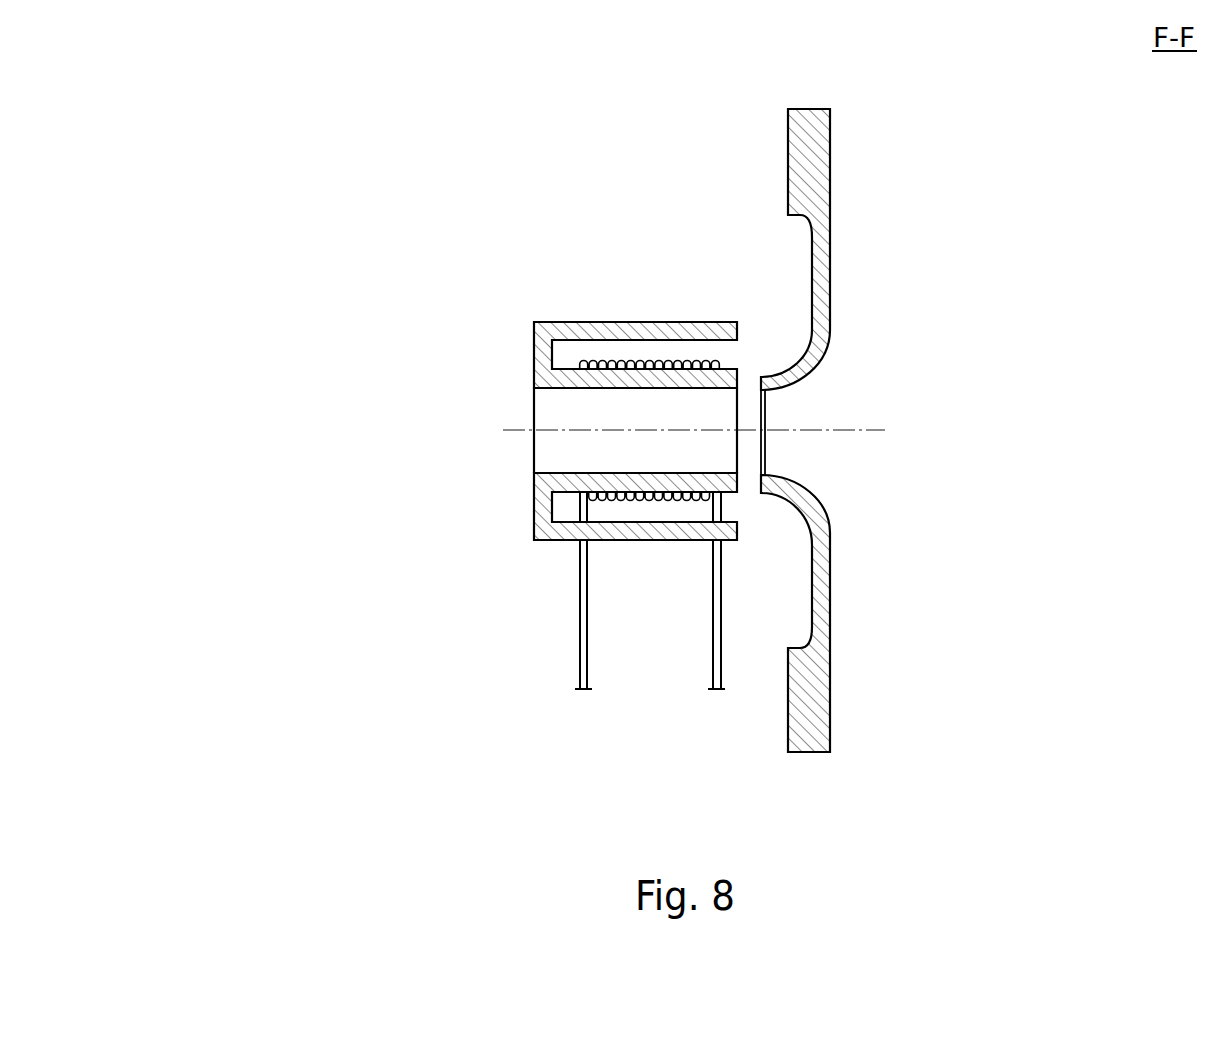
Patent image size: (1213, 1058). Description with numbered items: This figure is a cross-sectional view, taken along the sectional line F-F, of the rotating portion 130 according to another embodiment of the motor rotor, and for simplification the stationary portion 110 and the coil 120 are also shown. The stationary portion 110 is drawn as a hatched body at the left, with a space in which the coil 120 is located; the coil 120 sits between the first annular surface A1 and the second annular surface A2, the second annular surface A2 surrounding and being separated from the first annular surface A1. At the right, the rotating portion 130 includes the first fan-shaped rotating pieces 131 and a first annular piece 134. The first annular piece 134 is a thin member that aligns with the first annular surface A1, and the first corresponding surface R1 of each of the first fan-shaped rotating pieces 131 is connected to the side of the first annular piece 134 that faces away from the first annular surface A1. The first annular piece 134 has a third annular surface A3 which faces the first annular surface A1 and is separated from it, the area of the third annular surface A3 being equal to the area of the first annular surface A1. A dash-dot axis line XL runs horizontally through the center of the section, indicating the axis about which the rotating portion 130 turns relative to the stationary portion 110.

The stationary portion 110 is at (614, 333).
The coil 120 is at (643, 497).
The rotating portion 130 is at (561, 430).
The first fan-shaped rotating piece 131 is at (822, 672).
The first annular piece 134 is at (766, 410).
The first annular surface A1 is at (739, 482).
The second annular surface A2 is at (739, 528).
The third annular surface A3 is at (762, 491).
The first corresponding surface R1 is at (766, 488).
The axis line XL is at (706, 401).